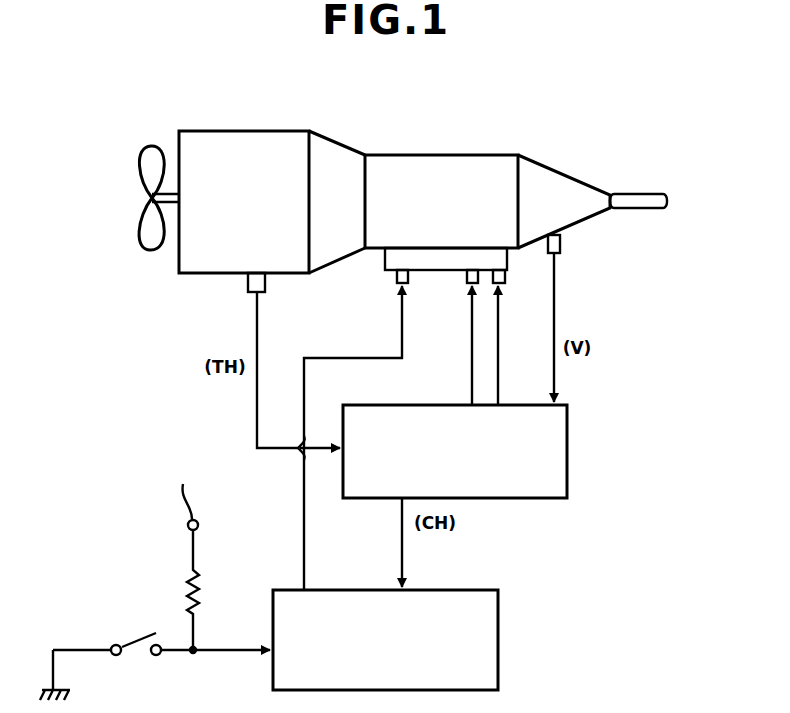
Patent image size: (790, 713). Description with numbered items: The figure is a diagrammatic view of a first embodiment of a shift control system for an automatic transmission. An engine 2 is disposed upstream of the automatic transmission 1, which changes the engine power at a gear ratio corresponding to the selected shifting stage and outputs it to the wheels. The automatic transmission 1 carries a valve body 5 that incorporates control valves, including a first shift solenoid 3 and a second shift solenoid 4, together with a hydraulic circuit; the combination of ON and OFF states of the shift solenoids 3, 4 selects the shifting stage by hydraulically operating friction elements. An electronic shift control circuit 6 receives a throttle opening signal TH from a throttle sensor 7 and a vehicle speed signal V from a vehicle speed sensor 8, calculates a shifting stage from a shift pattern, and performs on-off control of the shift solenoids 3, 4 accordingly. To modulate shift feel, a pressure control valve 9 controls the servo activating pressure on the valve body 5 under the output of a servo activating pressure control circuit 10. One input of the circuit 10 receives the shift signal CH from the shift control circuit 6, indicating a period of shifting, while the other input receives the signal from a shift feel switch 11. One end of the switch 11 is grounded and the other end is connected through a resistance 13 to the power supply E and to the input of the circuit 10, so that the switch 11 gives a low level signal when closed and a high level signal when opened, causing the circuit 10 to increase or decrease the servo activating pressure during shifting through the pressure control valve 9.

The automatic transmission 1 is at (466, 155).
The engine 2 is at (244, 131).
The first shift solenoid 3 is at (467, 278).
The second shift solenoid 4 is at (505, 280).
The valve body 5 is at (508, 262).
The electronic shift control circuit 6 is at (567, 430).
The throttle sensor 7 is at (247, 285).
The vehicle speed sensor 8 is at (560, 240).
The pressure control valve 9 is at (397, 279).
The servo activating pressure control circuit 10 is at (480, 590).
The shift feel switch 11 is at (126, 646).
The resistance 13 is at (186, 593).